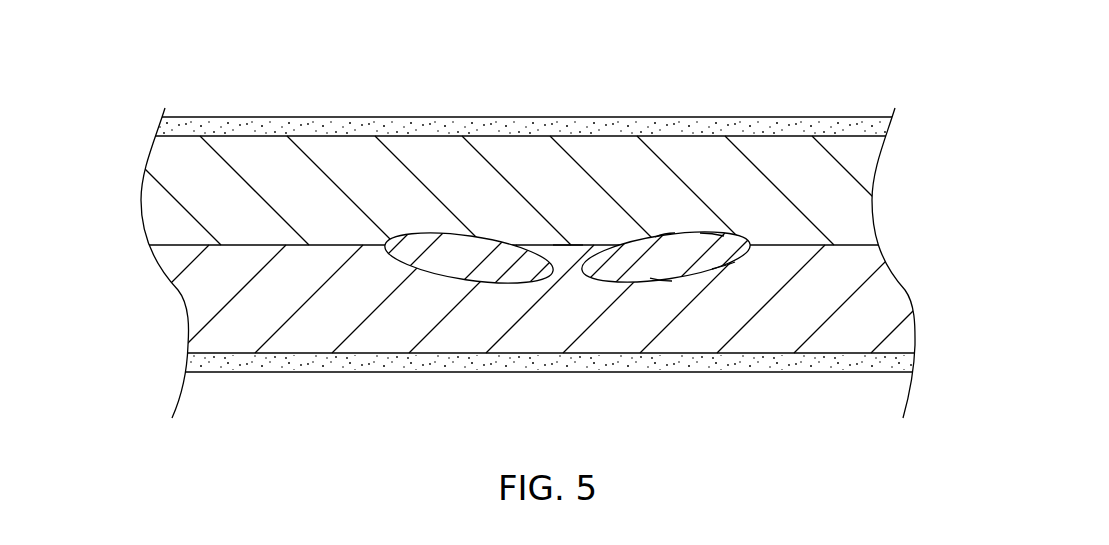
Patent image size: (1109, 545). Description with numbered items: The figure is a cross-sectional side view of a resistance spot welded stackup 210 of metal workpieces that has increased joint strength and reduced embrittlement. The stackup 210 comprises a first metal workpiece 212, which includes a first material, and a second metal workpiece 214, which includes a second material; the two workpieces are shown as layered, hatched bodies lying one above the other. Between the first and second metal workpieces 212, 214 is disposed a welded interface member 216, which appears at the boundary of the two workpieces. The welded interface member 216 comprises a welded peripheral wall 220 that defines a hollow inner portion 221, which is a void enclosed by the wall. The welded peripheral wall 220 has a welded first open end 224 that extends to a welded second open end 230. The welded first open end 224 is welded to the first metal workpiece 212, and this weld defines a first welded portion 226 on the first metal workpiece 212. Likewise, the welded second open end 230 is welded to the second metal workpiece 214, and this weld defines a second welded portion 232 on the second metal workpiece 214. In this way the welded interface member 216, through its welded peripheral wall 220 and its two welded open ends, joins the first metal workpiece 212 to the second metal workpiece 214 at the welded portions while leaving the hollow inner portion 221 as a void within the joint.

The resistance spot welded stackup 210 is at (526, 227).
The first metal workpiece 212 is at (155, 198).
The second metal workpiece 214 is at (200, 307).
The welded interface member 216 is at (476, 265).
The welded peripheral wall 220 is at (750, 247).
The hollow inner portion 221 is at (570, 263).
The welded first open end 224 is at (672, 233).
The first welded portion 226 is at (707, 233).
The welded second open end 230 is at (662, 278).
The second welded portion 232 is at (725, 263).